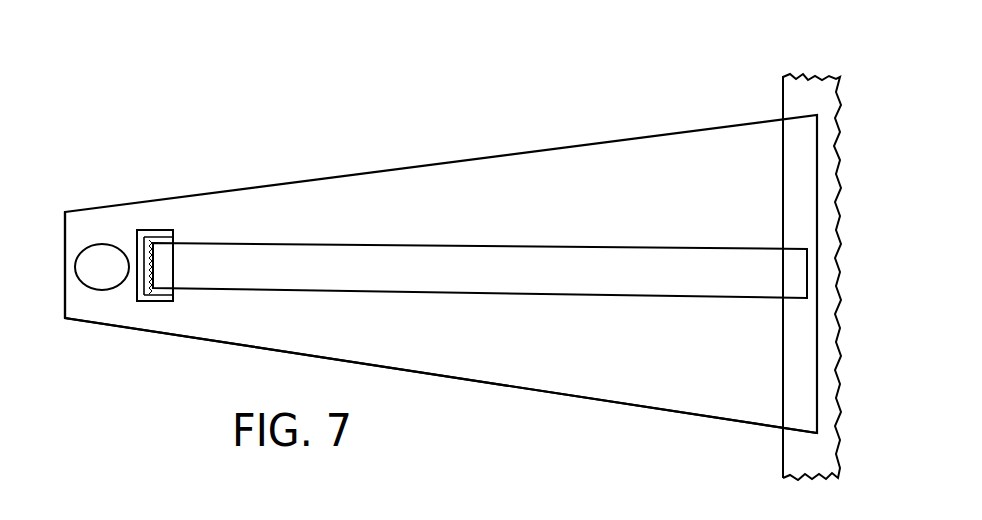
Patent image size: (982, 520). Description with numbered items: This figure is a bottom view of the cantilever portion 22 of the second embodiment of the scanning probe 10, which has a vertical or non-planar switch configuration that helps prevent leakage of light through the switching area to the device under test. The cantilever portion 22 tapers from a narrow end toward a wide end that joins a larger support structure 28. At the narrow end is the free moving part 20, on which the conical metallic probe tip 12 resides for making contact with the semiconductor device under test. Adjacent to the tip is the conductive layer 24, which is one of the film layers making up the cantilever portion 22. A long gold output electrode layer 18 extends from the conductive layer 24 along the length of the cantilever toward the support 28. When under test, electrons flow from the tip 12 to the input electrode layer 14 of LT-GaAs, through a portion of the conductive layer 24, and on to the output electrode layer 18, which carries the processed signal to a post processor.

The scanning probe 10 is at (400, 117).
The probe tip 12 is at (105, 243).
The input electrode layer 14 is at (108, 307).
The output electrode layer 18 is at (452, 245).
The free moving part 20 is at (82, 210).
The cantilever portion 22 is at (617, 137).
The conductive layer 24 is at (153, 228).
The wall 28 is at (783, 100).